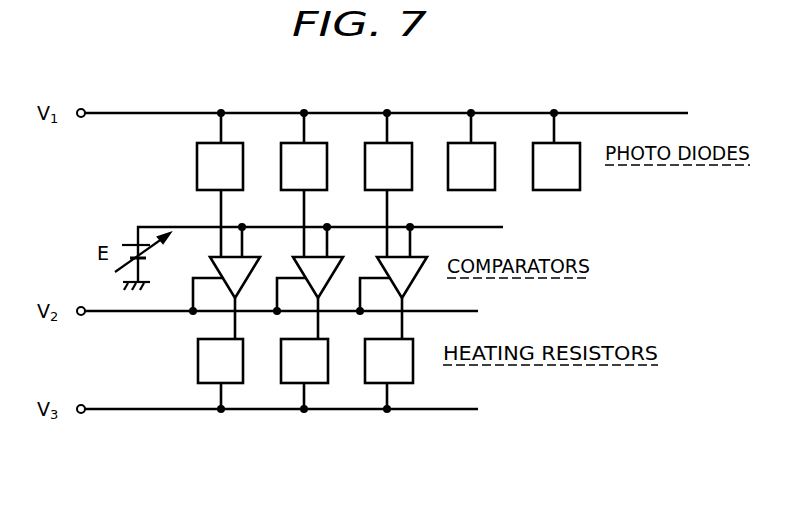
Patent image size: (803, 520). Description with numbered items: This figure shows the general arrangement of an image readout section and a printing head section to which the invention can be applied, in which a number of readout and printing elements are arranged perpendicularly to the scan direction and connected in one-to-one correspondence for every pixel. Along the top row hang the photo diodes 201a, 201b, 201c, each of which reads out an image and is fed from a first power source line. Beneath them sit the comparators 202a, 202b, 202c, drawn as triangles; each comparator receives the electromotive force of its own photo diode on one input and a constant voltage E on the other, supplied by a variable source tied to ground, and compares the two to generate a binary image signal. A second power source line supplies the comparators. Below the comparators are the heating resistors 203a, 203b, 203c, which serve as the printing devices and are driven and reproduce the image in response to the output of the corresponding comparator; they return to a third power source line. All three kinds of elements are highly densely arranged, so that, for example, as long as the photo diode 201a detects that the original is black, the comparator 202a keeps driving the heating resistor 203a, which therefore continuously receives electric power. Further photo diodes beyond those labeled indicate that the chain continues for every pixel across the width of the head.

The photo diode 201a is at (231, 147).
The photo diode 201b is at (321, 147).
The photo diode 201c is at (401, 147).
The comparator 202a is at (253, 268).
The comparator 202b is at (338, 270).
The comparator 202c is at (417, 254).
The heating resistor 203a is at (198, 365).
The heating resistor 203b is at (281, 370).
The heating resistor 203c is at (365, 368).